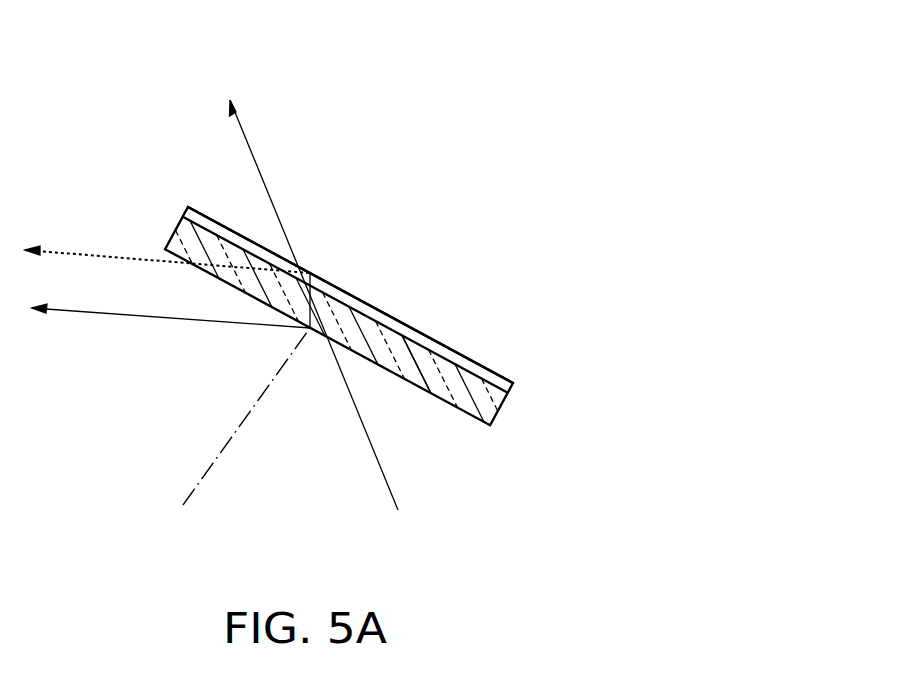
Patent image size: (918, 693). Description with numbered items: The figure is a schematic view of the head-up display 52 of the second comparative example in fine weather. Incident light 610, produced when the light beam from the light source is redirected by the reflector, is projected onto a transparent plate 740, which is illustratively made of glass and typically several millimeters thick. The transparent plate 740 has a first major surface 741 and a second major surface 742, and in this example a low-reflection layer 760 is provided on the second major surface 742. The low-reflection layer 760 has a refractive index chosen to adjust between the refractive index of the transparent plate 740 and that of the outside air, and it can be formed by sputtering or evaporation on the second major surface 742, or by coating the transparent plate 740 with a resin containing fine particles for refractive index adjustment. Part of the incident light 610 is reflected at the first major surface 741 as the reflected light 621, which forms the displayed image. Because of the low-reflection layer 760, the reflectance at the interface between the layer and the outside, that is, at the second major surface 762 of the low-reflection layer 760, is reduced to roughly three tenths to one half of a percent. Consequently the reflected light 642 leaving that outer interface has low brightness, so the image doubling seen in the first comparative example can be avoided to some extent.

The head-up display 52 is at (497, 168).
The incident light 610 is at (382, 479).
The reflected light 621 is at (103, 314).
The reflected light 642 is at (97, 250).
The transparent plate 740 is at (479, 367).
The first major surface 741 is at (470, 418).
The second major surface 742 is at (432, 347).
The low-reflection layer 760 is at (340, 291).
The second major surface 762 is at (318, 277).